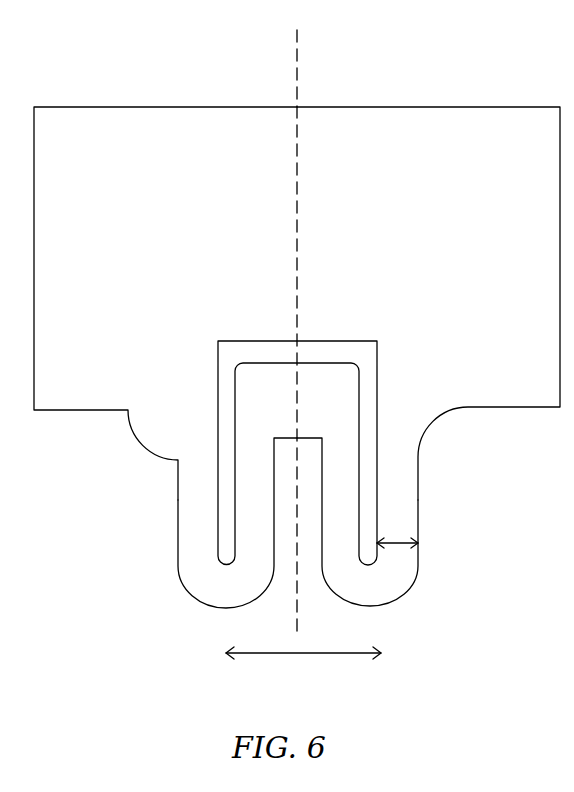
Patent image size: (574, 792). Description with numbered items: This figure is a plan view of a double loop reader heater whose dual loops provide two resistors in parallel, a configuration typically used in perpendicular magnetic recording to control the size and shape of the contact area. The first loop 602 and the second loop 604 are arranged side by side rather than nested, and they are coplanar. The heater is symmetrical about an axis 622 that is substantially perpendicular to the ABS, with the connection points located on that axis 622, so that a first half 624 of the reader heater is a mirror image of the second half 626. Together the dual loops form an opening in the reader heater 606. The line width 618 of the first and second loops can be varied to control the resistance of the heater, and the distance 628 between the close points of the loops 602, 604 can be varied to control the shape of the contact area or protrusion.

The first loop 602 is at (190, 540).
The second loop 604 is at (408, 490).
The opening in the reader heater 606 is at (357, 357).
The line width 618 is at (404, 546).
The axis 622 is at (298, 55).
The first half 624 is at (118, 107).
The second half 626 is at (434, 107).
The distance 628 is at (258, 655).